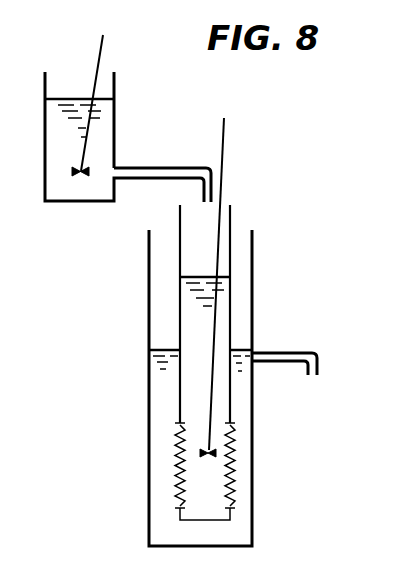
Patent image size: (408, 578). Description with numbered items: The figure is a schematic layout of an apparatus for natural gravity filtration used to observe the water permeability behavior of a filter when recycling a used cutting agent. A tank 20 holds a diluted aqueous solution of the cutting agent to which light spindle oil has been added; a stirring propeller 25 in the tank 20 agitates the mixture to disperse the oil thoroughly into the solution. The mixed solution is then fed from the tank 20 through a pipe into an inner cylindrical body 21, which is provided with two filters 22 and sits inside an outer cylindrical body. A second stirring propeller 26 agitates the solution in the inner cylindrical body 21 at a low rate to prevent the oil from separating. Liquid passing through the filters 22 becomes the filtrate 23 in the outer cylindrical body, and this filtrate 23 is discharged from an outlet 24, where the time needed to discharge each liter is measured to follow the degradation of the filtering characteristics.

The tank 20 is at (82, 202).
The inner cylindrical body 21 is at (192, 326).
The filter 22 is at (228, 480).
The filtrate 23 is at (166, 478).
The outlet 24 is at (313, 379).
The stirring propeller 25 is at (99, 57).
The stirring propeller 26 is at (222, 156).